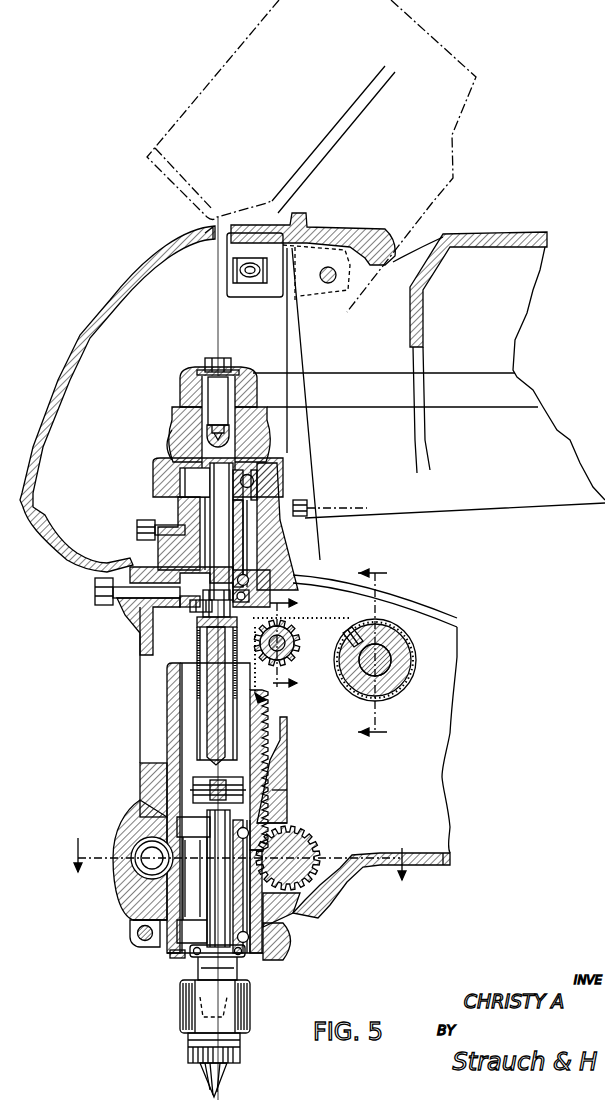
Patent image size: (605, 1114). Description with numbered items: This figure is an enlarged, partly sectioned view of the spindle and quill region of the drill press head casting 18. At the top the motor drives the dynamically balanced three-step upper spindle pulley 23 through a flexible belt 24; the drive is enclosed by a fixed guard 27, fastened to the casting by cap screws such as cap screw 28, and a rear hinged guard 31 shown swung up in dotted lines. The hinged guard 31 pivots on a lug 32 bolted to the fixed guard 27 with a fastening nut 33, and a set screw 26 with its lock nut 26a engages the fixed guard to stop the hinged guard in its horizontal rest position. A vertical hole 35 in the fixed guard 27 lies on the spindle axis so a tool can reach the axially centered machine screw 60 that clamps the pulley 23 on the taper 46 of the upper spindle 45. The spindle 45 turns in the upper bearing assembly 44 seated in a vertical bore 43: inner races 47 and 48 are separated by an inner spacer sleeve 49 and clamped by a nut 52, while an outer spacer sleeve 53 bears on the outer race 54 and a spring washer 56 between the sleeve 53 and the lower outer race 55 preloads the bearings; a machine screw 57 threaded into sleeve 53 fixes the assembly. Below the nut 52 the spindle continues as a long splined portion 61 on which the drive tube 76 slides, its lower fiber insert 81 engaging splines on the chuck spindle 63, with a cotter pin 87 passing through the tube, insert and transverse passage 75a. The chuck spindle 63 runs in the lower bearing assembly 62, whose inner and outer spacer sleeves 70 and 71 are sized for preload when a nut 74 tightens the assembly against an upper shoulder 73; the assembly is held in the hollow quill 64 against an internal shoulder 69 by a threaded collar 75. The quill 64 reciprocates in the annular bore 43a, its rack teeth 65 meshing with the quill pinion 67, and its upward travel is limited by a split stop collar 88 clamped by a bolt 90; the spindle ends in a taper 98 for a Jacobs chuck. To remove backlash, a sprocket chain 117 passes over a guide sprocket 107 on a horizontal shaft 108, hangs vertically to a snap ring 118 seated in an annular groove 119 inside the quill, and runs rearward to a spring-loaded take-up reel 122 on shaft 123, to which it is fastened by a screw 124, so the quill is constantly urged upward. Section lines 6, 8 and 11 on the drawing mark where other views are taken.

The rear or hinged belt guard 31 is at (155, 150).
The lug 32 is at (340, 232).
The vertical hole 35 is at (213, 240).
The fixed guard 27 is at (108, 300).
The fastening nut 33 is at (262, 286).
The set screw 26 is at (301, 518).
The lock nuts 26a is at (312, 502).
The machine screw 60 is at (226, 360).
The flexible belt 24 is at (183, 387).
The upper spindle pulley 23 is at (178, 418).
The taper 46 is at (201, 443).
The inner race 47 is at (240, 460).
The upper ball bearing or pulley spindle assembly 44 is at (195, 473).
The vertical bore 43 is at (183, 481).
The upper or pulley spindle 45 is at (262, 541).
The outer race 54 is at (265, 479).
The outer spacer sleeve 53 is at (272, 503).
The inner spacer sleeve 49 is at (262, 528).
The spring washer 56 is at (163, 561).
The machine screw 57 is at (137, 527).
The outer race 55 is at (292, 576).
The section line 8- 8 is at (372, 653).
The cap screw 28 is at (95, 592).
The nut 52 is at (200, 612).
The inner race 48 is at (241, 603).
The sprocket chain 117 is at (310, 618).
The screw 124 is at (345, 628).
The spring loaded take-up reel 122 is at (408, 685).
The rotatable shaft 123 is at (393, 668).
The guide sprocket 107 is at (290, 646).
The horizontally rotatable shaft 108 is at (284, 660).
The section line 11- 11 is at (282, 644).
The snap ring 118 is at (266, 704).
The annular groove 119 is at (174, 697).
The rack teeth 65 is at (269, 737).
The splined portion 61 is at (214, 698).
The cylindrical tube 76 is at (199, 720).
The internal shoulder 69 is at (200, 793).
The cotter pin 87 is at (273, 785).
The lower insert 81 is at (272, 795).
The upper shoulder 73 is at (272, 815).
The transverse passage 75a is at (155, 772).
The lower ball bearing or chuck spindle assembly 62 is at (185, 828).
The inner spacer sleeve 70 is at (228, 902).
The split ring type stop collar 88 is at (285, 953).
The hollow cylindrical quill 64 is at (140, 906).
The annular bore 43a is at (135, 895).
The bolt 90 is at (137, 934).
The quill pinion 67 is at (305, 838).
The section line 6- 6 is at (245, 856).
The head casting 18 is at (348, 868).
The chuck spindle 63 is at (285, 911).
The outer spacer sleeve 71 is at (286, 941).
The collar 75 is at (178, 957).
The nut 74 is at (195, 957).
The taper 98 is at (226, 1004).